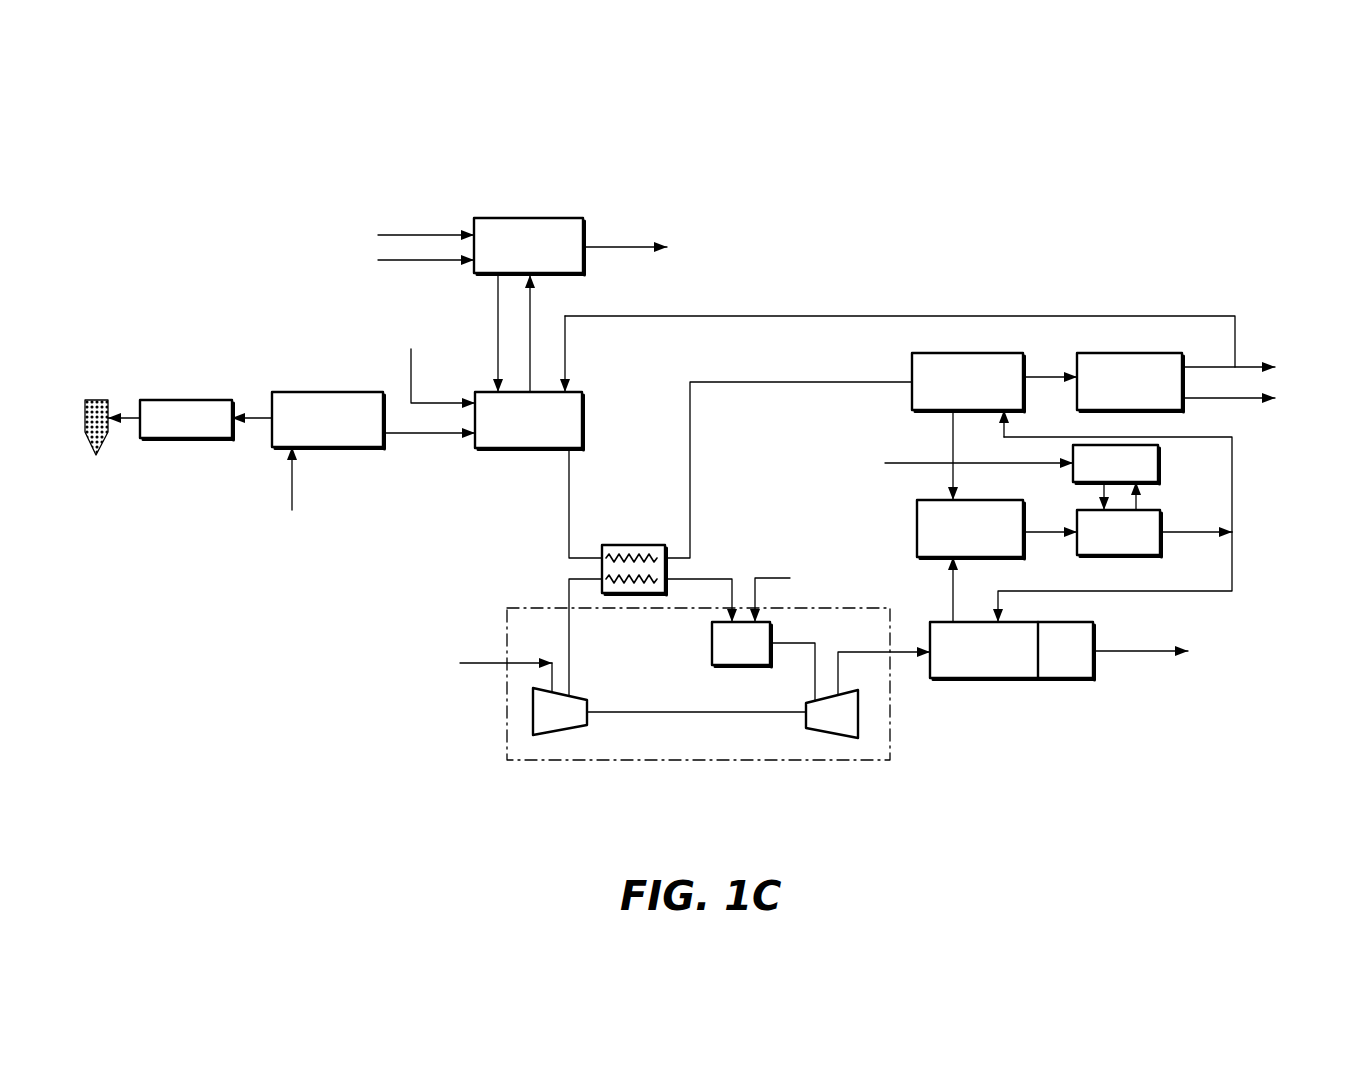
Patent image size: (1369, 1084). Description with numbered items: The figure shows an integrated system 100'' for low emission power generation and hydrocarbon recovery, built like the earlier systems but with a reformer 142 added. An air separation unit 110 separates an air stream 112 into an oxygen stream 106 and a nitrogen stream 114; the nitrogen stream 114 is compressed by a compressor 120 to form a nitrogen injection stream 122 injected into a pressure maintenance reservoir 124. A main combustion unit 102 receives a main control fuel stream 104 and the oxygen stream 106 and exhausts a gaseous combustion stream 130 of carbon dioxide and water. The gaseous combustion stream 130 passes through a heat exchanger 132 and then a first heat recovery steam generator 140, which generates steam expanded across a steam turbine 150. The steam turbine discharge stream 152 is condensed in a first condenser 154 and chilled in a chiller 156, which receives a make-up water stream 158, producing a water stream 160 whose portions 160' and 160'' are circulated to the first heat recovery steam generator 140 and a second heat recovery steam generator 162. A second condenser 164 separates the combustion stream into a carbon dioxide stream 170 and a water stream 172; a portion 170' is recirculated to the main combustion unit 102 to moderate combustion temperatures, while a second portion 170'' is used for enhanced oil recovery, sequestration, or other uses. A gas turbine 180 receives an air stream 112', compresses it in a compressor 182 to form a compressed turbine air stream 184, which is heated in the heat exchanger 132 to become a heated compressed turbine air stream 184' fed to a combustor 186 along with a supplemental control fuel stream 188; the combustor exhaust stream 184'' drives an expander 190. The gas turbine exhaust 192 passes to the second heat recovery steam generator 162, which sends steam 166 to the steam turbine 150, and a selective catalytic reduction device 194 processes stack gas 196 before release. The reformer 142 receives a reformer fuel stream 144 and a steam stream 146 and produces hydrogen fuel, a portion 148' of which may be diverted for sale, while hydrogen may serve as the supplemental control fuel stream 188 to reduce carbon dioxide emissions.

The integrated system 100'' is at (731, 104).
The main combustion unit 102 is at (529, 362).
The main control fuel stream 104 is at (418, 375).
The oxygen stream 106 is at (403, 438).
The air separation unit 110 is at (328, 420).
The air stream 112 is at (295, 493).
The air stream 112' is at (479, 672).
The nitrogen stream 114 is at (258, 418).
The compressor 120 is at (187, 420).
The nitrogen injection stream 122 is at (137, 420).
The pressure maintenance reservoir 124 is at (98, 399).
The gaseous combustion stream 130 is at (568, 485).
The heat exchanger 132 is at (650, 543).
The first heat recovery steam generator 140 is at (994, 382).
The reformer 142 is at (496, 327).
The reformer fuel stream 144 is at (422, 233).
The steam stream 146 is at (422, 262).
The portion of hydrogen fuel stream 148' is at (626, 228).
The steam turbine 150 is at (971, 529).
The steam turbine discharge stream 152 is at (1050, 532).
The first condenser 154 is at (1119, 519).
The chiller 156 is at (1116, 477).
The make-up water stream 158 is at (956, 466).
The water stream 160 is at (1196, 515).
The water stream portion 160' is at (1158, 471).
The water stream portion 160'' is at (1160, 577).
The second heat recovery steam generator 162 is at (1012, 651).
The second condenser 164 is at (1130, 382).
The steam 166 is at (951, 590).
The CO2 stream 170 is at (1212, 346).
The recirculated CO2 portion 170' is at (900, 339).
The second CO2 portion 170'' is at (1306, 366).
The water stream 172 is at (1252, 401).
The gas turbine 180 is at (623, 763).
The compressor 182 is at (669, 711).
The compressed turbine air stream 184 is at (595, 637).
The heated compressed turbine air stream 184' is at (714, 583).
The combustor exhaust stream 184'' is at (812, 657).
The combustor 186 is at (742, 644).
The supplemental control fuel stream 188 is at (795, 595).
The expander 190 is at (832, 714).
The gas turbine exhaust 192 is at (902, 657).
The selective catalytic reduction device 194 is at (1062, 650).
The stack gas 196 is at (1117, 651).